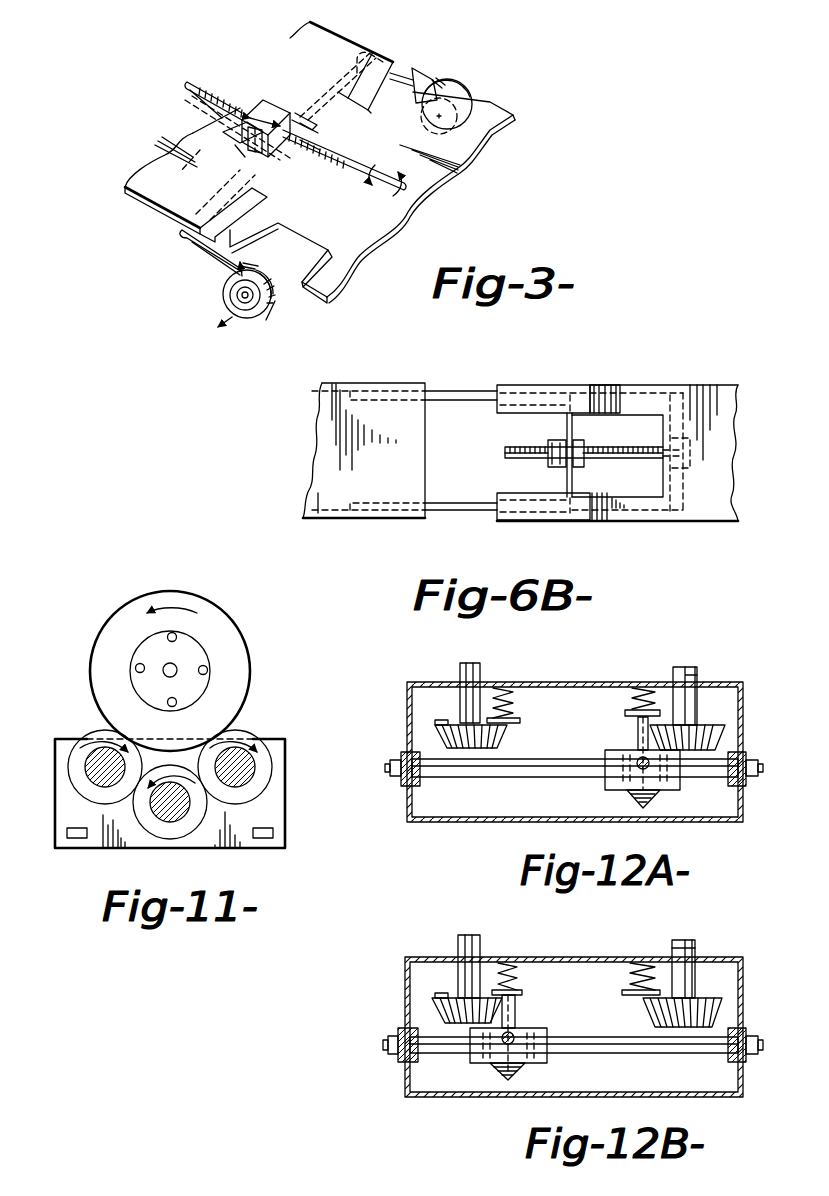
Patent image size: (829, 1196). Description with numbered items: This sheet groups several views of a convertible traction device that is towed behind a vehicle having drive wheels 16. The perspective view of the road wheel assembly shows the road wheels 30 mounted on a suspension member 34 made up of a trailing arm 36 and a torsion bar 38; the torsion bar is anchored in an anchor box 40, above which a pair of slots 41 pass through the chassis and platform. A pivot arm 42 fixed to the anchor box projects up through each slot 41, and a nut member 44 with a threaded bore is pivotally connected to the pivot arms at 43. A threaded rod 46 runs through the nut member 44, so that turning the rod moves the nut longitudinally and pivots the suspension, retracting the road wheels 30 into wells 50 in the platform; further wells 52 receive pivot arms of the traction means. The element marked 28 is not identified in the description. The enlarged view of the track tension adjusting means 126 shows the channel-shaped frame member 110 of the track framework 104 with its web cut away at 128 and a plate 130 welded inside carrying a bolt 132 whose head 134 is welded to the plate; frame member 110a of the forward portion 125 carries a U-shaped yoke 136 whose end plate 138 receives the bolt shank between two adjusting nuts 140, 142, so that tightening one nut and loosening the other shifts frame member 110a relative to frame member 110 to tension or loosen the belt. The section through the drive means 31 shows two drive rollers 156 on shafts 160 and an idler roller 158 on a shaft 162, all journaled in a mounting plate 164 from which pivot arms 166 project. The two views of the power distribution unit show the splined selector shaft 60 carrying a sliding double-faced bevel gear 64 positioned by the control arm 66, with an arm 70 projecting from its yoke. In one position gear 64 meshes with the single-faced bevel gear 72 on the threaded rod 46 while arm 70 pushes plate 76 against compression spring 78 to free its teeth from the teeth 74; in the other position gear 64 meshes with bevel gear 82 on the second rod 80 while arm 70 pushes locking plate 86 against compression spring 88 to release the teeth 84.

In FIG. 3, the mounting plate 28 is at (200, 253).
In FIG. 3, the road wheels 30 is at (252, 306).
In FIG. 3, the suspension member 34 is at (232, 270).
In FIG. 3, the trailing arm 36 is at (203, 250).
In FIG. 3, the torsion bar 38 is at (380, 44).
In FIG. 3, the anchor box 40 is at (217, 121).
In FIG. 3, the slots 41 is at (235, 126).
In FIG. 3, the pivot arm 42 is at (263, 152).
In FIG. 3, the pivotal connection 43 is at (296, 137).
In FIG. 3, the nut member 44 is at (262, 100).
In FIG. 3, the threaded rod 46 is at (397, 195).
In FIG. 12A, the threaded rod 46 is at (690, 680).
In FIG. 12B, the threaded rod 46 is at (690, 952).
In FIG. 3, the wells 50 is at (298, 258).
In FIG. 3, the wells 52 is at (398, 71).
In FIG. 6B, the framework 104 is at (535, 521).
In FIG. 6B, the frame member 110 is at (725, 400).
In FIG. 6B, the frame member 110a is at (330, 485).
In FIG. 6B, the forward portion 125 is at (375, 521).
In FIG. 6B, the adjusting means 126 is at (543, 385).
In FIG. 6B, the cut out 128 is at (510, 476).
In FIG. 6B, the plate 130 is at (676, 521).
In FIG. 6B, the bolt 132 is at (630, 460).
In FIG. 6B, the head 134 is at (683, 395).
In FIG. 6B, the U-shaped yoke 136 is at (455, 389).
In FIG. 6B, the end plate 138 is at (569, 430).
In FIG. 6B, the adjusting nut 140 is at (545, 441).
In FIG. 6B, the adjusting nut 142 is at (583, 468).
In FIG. 11, the drive wheels 16 is at (238, 672).
In FIG. 11, the drive means 31 is at (243, 726).
In FIG. 11, the drive rollers 156 is at (90, 742).
In FIG. 11, the idler roller 158 is at (165, 836).
In FIG. 11, the shafts 160 is at (105, 760).
In FIG. 11, the shaft 162 is at (185, 815).
In FIG. 11, the mounting plate 164 is at (285, 786).
In FIG. 11, the pivot arms 166 is at (77, 840).
In FIG. 12A, the selector shaft 60 is at (455, 778).
In FIG. 12B, the selector shaft 60 is at (442, 1050).
In FIG. 12A, the double-faced bevel gear 64 is at (638, 805).
In FIG. 12B, the double-faced bevel gear 64 is at (492, 1077).
In FIG. 12A, the selector lever 66 is at (649, 772).
In FIG. 12B, the selector lever 66 is at (512, 1048).
In FIG. 12A, the arm 70 is at (637, 725).
In FIG. 12B, the arm 70 is at (516, 1003).
In FIG. 12A, the single-faced bevel gear 72 is at (722, 735).
In FIG. 12B, the single-faced bevel gear 72 is at (655, 1012).
In FIG. 12A, the teeth 74 is at (703, 724).
In FIG. 12B, the teeth 74 is at (705, 998).
In FIG. 12A, the plate 76 is at (625, 712).
In FIG. 12B, the plate 76 is at (630, 992).
In FIG. 12A, the compression spring 78 is at (643, 690).
In FIG. 12B, the compression spring 78 is at (642, 965).
In FIG. 12A, the second rotatable rod 80 is at (481, 673).
In FIG. 12B, the second rotatable rod 80 is at (458, 948).
In FIG. 12A, the single-faced bevel gear 82 is at (440, 736).
In FIG. 12B, the single-faced bevel gear 82 is at (435, 1010).
In FIG. 12A, the teeth 84 is at (443, 720).
In FIG. 12B, the teeth 84 is at (440, 993).
In FIG. 12A, the locking plate 86 is at (520, 720).
In FIG. 12B, the locking plate 86 is at (522, 992).
In FIG. 12A, the compression spring 88 is at (512, 696).
In FIG. 12B, the compression spring 88 is at (508, 963).